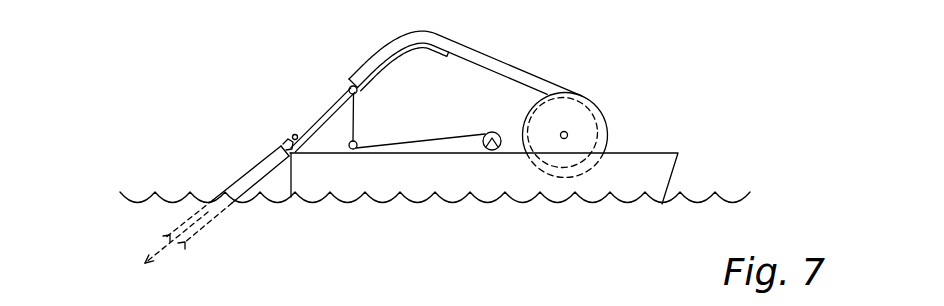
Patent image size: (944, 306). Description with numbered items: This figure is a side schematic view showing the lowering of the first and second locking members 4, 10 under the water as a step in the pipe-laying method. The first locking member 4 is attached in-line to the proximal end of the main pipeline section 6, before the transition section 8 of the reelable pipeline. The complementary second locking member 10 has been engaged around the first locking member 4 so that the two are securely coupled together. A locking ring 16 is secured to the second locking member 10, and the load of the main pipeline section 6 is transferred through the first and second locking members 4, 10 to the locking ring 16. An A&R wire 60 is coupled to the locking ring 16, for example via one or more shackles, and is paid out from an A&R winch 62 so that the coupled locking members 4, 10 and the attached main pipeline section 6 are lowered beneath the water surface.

The first locking member 4 is at (268, 148).
The main pipeline section 6 is at (212, 217).
The transition section 8 is at (512, 60).
The second locking member 10 is at (293, 153).
The locking ring 16 is at (292, 140).
The A&R wire 60 is at (328, 107).
The A&R winch 62 is at (487, 132).